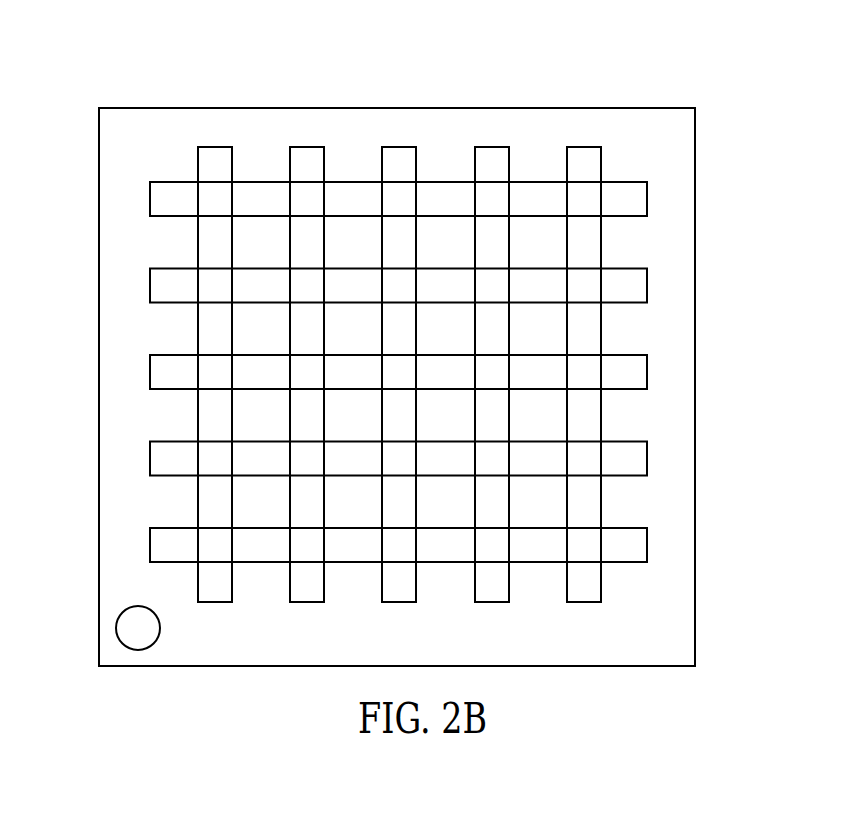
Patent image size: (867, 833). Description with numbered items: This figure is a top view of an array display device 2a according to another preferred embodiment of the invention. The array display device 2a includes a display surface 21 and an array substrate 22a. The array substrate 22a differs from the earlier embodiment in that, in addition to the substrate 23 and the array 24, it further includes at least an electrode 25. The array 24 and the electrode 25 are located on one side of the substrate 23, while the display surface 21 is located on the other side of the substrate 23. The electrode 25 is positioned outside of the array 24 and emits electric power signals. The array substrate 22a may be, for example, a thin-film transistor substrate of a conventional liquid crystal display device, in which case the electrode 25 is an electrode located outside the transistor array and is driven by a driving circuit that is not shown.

The array display device 2a is at (168, 92).
The display surface 21 is at (696, 255).
The array substrate 22a is at (665, 55).
The substrate 23 is at (650, 136).
The array 24 is at (581, 148).
The electrode 25 is at (140, 628).